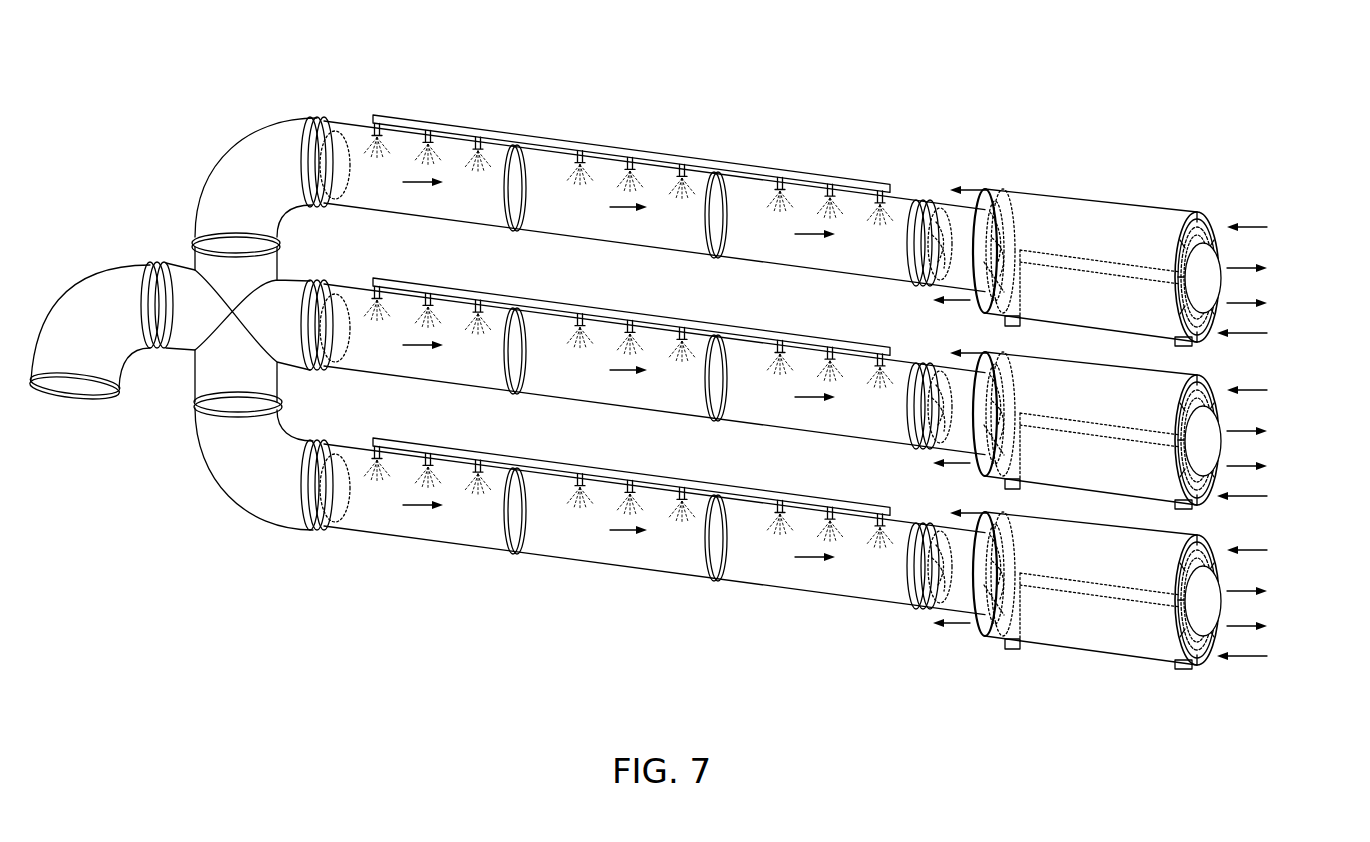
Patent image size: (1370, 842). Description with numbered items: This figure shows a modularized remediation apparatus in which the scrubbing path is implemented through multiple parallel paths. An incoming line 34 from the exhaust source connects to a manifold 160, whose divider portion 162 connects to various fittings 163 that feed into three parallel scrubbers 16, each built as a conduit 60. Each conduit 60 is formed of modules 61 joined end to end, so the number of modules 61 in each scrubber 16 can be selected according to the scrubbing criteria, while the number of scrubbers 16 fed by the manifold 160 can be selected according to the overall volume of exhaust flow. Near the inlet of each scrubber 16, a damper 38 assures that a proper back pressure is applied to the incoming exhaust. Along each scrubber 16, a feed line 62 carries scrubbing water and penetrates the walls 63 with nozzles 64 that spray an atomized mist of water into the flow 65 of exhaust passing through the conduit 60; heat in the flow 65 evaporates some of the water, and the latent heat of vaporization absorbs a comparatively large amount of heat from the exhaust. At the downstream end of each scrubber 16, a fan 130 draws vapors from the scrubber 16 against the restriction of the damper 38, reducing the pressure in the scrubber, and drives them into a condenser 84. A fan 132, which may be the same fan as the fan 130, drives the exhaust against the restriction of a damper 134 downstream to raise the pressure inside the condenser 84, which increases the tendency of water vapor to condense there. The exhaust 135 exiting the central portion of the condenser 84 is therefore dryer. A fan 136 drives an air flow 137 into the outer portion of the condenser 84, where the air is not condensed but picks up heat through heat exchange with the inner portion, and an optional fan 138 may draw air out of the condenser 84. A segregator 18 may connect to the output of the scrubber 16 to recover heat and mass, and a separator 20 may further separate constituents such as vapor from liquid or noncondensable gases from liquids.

The scrubber 16 is at (643, 323).
The segregator 18 is at (1164, 406).
The separator 20 is at (1324, 268).
The incoming line 34 is at (87, 376).
The damper 38 is at (333, 173).
The conduit 60 is at (577, 222).
The module 61 is at (631, 293).
The feed line 62 is at (803, 168).
The wall 63 is at (449, 128).
The nozzle 64 is at (497, 137).
The flow 65 is at (625, 207).
The condenser 84 is at (1172, 188).
The fan 130 is at (947, 210).
The fan 132 is at (1010, 227).
The damper 134 is at (1213, 282).
The exhaust 135 is at (1240, 266).
The fan 136 is at (1195, 340).
The air flow 137 is at (1245, 230).
The fan 138 is at (1007, 190).
The manifold 160 is at (195, 122).
The divider portion 162 is at (175, 278).
The fitting 163 is at (257, 147).